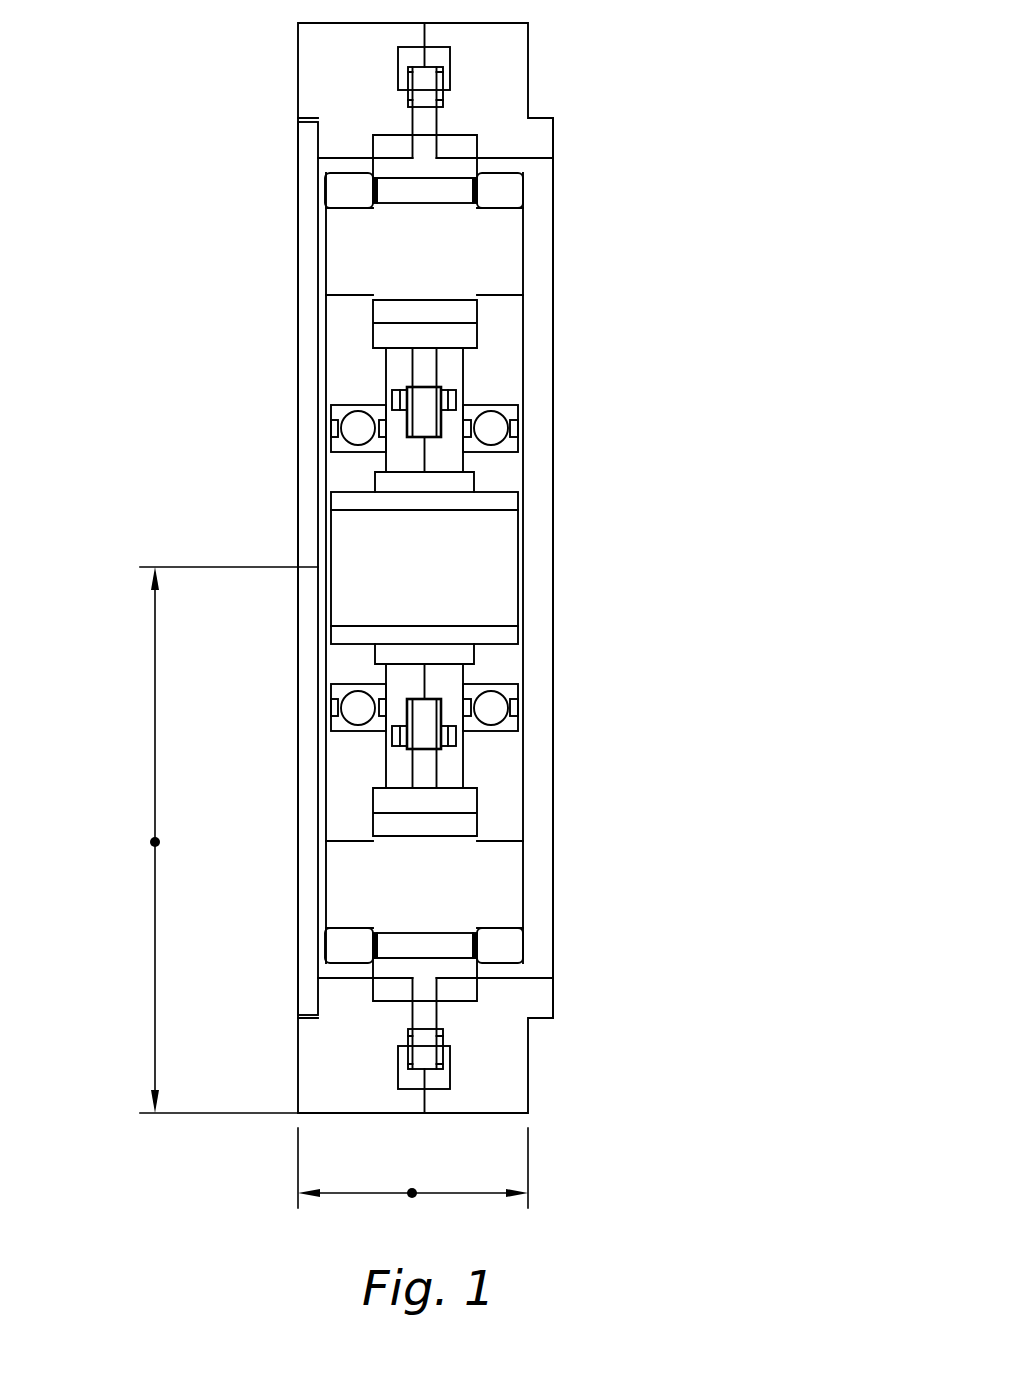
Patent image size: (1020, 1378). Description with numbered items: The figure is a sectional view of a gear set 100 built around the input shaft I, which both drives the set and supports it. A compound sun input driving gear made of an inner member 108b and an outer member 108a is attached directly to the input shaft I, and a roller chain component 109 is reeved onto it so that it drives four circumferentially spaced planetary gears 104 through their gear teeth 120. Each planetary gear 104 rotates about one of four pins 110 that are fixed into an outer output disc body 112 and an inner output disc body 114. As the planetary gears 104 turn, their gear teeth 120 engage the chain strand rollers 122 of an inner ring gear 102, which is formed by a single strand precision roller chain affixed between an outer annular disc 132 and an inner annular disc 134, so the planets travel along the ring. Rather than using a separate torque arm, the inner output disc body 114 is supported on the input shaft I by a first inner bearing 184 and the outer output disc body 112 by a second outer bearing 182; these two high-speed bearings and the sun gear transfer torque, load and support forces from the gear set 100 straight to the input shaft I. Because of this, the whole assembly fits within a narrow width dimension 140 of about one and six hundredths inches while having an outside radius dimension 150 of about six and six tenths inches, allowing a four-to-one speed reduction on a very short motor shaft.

The gear set 100 is at (692, 313).
The inner ring gear 102 is at (470, 108).
The planetary gears 104 is at (435, 170).
The outer member 108a is at (445, 467).
The inner member 108b is at (352, 661).
The roller chain component 109 is at (443, 693).
The pins 110 is at (348, 247).
The outer output disc body 112 is at (545, 793).
The inner output disc body 114 is at (307, 785).
The gear teeth 120 is at (423, 417).
The chain strand rollers 122 is at (437, 1038).
The outer annular disc 132 is at (490, 62).
The inner annular disc 134 is at (338, 61).
The width dimension 140 is at (412, 1193).
The outside radius dimension 150 is at (155, 842).
The second outer bearing 182 is at (490, 713).
The first inner bearing 184 is at (358, 438).
The input shaft I is at (482, 576).